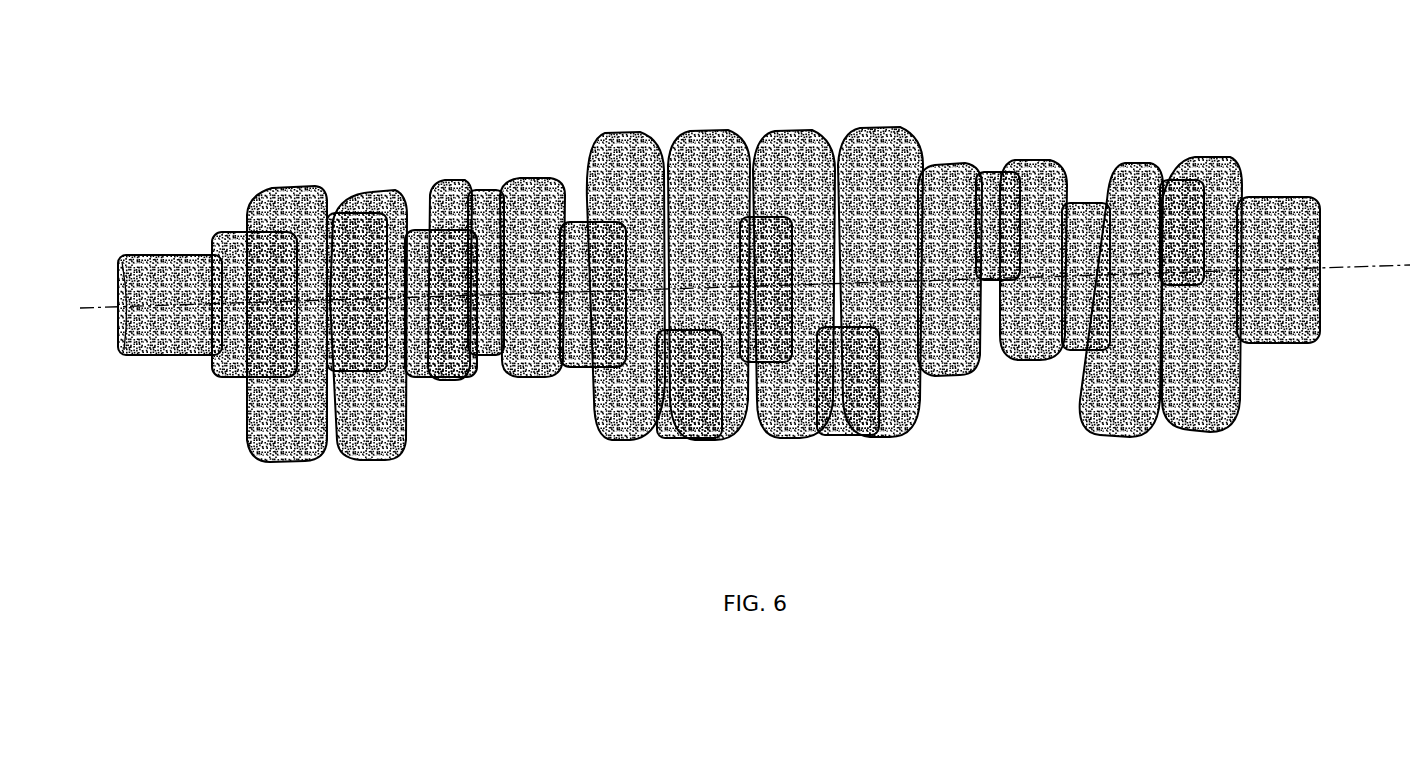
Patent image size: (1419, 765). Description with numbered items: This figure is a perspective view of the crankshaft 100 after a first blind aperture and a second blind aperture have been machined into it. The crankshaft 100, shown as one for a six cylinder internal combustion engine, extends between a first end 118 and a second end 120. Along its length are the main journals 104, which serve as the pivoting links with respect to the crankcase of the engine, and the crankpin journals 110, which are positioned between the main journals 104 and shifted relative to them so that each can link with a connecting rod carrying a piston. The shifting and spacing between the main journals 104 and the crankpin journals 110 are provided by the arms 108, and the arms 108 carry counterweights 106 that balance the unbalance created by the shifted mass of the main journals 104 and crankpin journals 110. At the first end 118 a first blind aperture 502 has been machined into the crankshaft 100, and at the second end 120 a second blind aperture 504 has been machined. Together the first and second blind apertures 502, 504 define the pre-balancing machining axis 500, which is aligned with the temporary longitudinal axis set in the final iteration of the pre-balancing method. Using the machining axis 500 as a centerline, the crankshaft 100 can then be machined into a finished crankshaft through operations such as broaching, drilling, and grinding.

The crankshaft 100 is at (745, 324).
The main journals 104 is at (160, 362).
The counterweights 106 is at (268, 462).
The arms 108 is at (440, 182).
The crankpin journals 110 is at (345, 212).
The first end 118 is at (110, 358).
The second end 120 is at (1300, 198).
The pre-balancing machining axis 500 is at (1355, 265).
The first blind aperture 502 is at (122, 262).
The second blind aperture 504 is at (1322, 236).